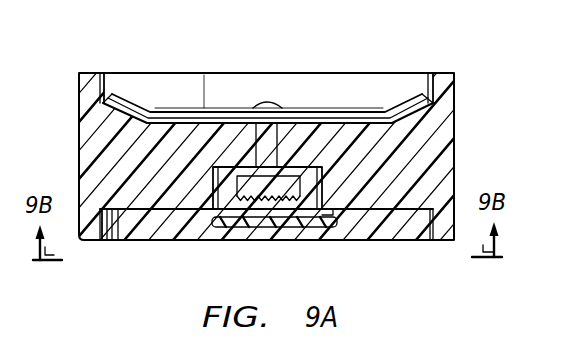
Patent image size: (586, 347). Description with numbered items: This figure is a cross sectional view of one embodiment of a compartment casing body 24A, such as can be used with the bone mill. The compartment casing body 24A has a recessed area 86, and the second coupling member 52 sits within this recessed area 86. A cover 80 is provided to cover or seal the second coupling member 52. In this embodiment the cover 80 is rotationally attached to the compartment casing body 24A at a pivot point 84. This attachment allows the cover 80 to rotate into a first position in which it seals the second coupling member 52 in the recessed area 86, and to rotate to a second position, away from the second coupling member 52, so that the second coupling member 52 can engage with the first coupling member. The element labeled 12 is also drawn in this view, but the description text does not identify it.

The plate 12 is at (287, 86).
The compartment casing body 24A is at (450, 92).
The second coupling member 52 is at (244, 228).
The cover 80 is at (214, 230).
The pivot point 84 is at (333, 212).
The recessed area 86 is at (310, 200).